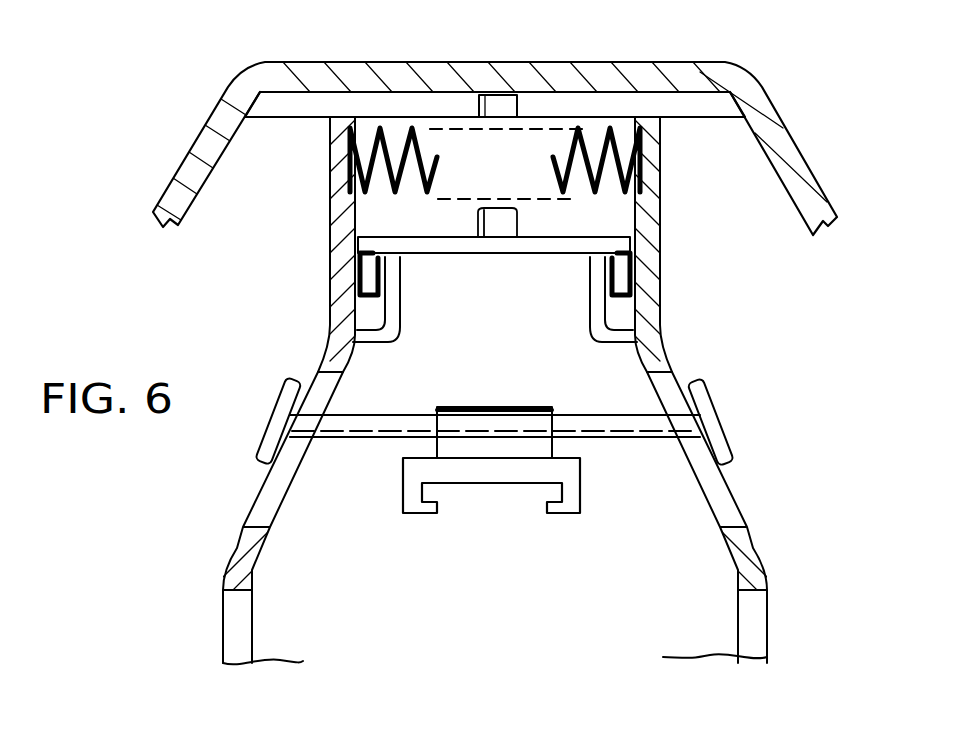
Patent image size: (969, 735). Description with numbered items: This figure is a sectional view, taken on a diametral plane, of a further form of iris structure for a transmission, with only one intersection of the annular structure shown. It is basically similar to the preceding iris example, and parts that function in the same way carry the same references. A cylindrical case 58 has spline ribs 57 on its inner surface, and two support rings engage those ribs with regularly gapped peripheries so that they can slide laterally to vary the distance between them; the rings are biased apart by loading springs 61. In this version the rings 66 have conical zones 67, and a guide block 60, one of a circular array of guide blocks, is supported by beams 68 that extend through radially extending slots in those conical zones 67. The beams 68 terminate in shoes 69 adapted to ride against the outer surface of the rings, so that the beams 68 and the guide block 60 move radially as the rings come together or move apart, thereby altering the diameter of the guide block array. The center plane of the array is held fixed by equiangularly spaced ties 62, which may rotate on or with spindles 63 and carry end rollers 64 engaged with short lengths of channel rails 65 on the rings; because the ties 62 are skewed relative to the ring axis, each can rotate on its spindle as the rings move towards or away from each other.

The spline ribs 57 is at (678, 107).
The cylindrical case 58 is at (248, 92).
The guide block 60 is at (570, 493).
The loading springs 61 is at (393, 146).
The ties 62 is at (407, 247).
The spindles 63 is at (500, 105).
The end rollers 64 is at (363, 272).
The channel rails 65 is at (345, 340).
The rings 66 is at (338, 310).
The conical zones 67 is at (246, 481).
The beams 68 is at (658, 445).
The shoes 69 is at (280, 418).